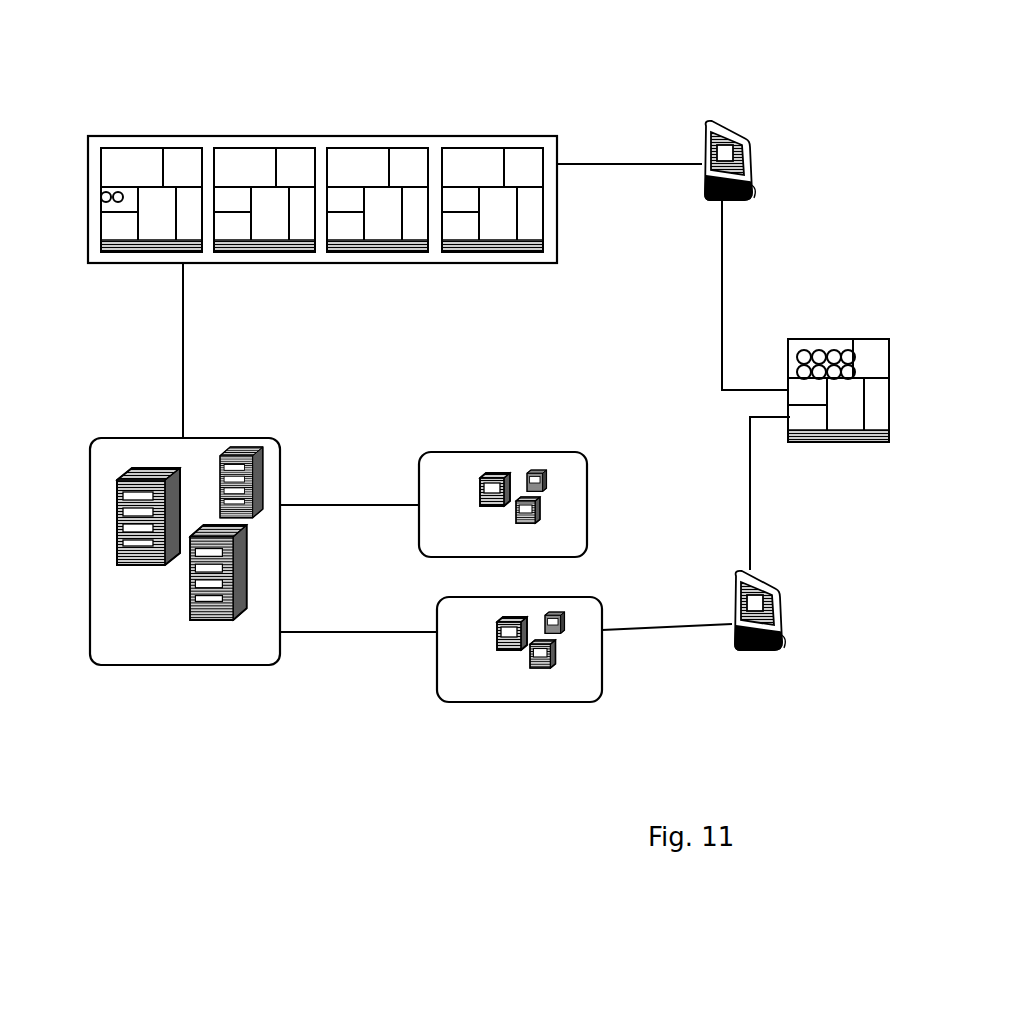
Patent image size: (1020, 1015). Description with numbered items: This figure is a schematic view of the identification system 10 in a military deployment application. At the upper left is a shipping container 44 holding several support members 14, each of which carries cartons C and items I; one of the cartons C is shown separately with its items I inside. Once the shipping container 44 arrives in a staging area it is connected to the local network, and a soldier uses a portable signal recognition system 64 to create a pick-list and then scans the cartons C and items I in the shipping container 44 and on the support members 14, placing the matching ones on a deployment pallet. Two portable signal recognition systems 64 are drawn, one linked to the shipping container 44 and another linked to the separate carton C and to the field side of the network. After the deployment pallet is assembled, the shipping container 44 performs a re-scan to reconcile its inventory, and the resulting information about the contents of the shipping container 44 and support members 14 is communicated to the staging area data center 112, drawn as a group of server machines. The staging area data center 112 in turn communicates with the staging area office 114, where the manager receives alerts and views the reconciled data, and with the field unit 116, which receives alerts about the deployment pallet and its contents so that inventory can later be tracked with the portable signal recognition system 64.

The identification system 10 is at (627, 90).
The shipping container 44 is at (168, 135).
The support member 14 is at (105, 242).
The carton C is at (134, 148).
The item I is at (103, 197).
The portable signal recognition system 64 is at (728, 120).
The staging area data center 112 is at (231, 438).
The staging area office 114 is at (475, 452).
The field unit 116 is at (437, 672).